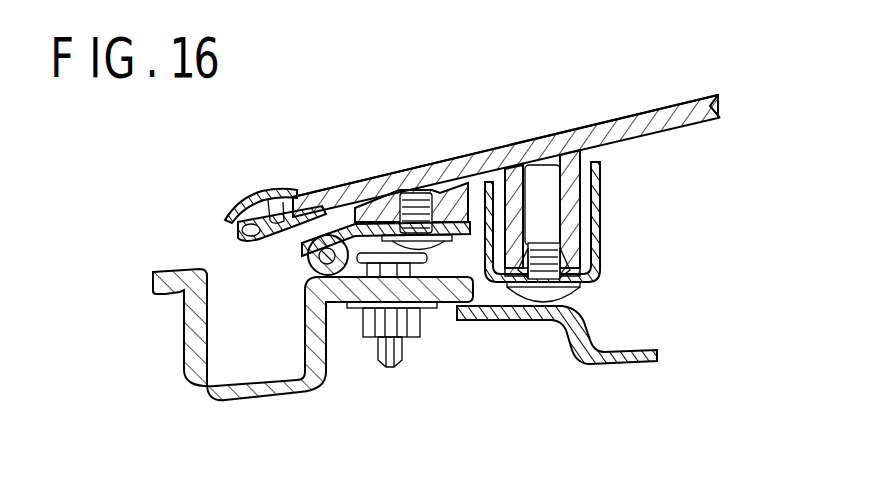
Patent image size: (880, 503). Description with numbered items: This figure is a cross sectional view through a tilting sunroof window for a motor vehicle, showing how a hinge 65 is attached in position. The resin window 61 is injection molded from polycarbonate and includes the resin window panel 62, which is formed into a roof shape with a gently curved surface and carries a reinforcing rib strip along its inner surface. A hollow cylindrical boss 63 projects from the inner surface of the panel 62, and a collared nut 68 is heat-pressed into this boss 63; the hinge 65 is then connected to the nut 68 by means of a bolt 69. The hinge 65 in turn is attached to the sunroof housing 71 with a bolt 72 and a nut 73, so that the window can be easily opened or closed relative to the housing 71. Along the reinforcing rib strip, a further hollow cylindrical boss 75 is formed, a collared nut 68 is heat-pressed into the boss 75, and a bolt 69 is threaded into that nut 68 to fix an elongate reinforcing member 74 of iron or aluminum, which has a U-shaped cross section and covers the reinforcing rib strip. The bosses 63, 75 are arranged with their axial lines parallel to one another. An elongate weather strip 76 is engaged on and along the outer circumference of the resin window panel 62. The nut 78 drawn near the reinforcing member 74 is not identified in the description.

The resin window 61 is at (487, 150).
The resin window panel 62 is at (630, 114).
The hollow cylindrical boss 63 is at (425, 190).
The hinge 65 is at (316, 258).
The collared nut 68 is at (393, 193).
The bolt 69 is at (396, 210).
The sunroof housing 71 is at (262, 400).
The bolt 72 is at (420, 316).
The nut 73 is at (386, 356).
The reinforcing member 74 is at (600, 224).
The hollow cylindrical boss 75 is at (568, 199).
The weather strip 76 is at (260, 192).
The nut 78 is at (562, 260).